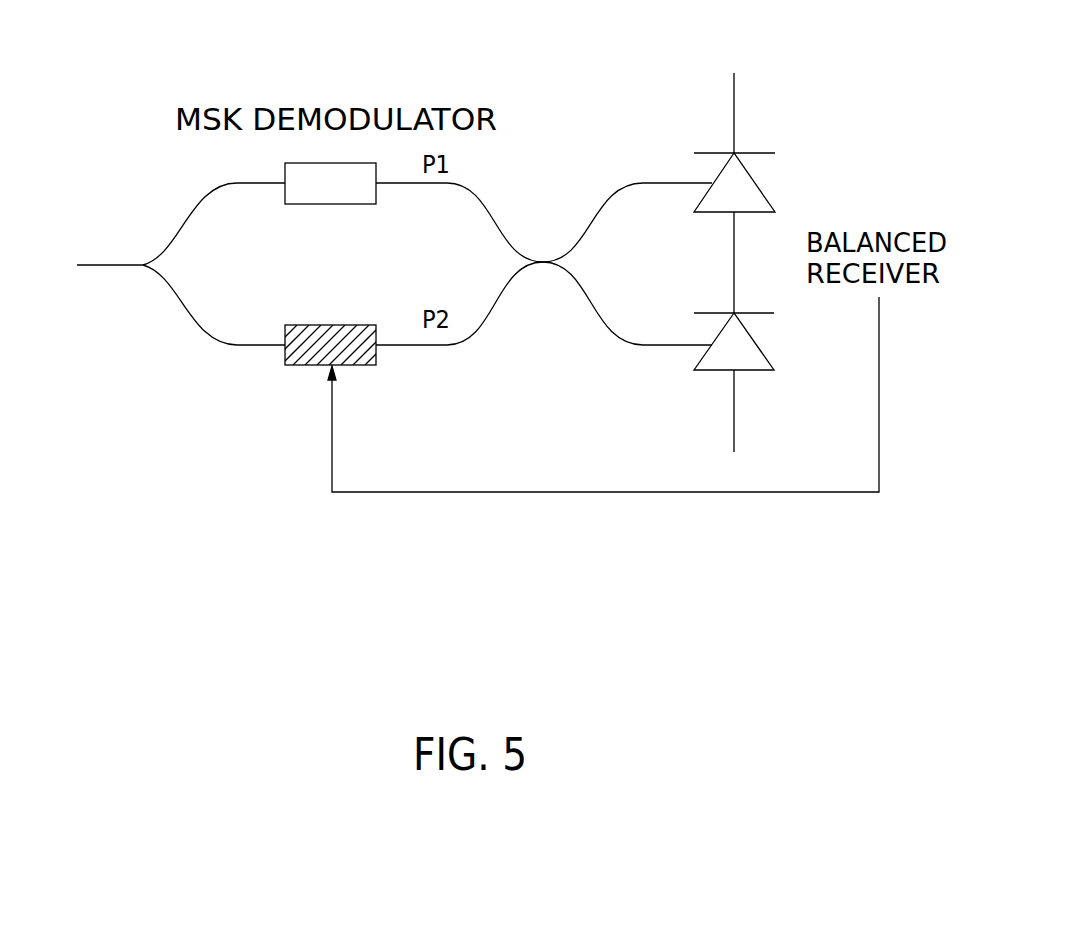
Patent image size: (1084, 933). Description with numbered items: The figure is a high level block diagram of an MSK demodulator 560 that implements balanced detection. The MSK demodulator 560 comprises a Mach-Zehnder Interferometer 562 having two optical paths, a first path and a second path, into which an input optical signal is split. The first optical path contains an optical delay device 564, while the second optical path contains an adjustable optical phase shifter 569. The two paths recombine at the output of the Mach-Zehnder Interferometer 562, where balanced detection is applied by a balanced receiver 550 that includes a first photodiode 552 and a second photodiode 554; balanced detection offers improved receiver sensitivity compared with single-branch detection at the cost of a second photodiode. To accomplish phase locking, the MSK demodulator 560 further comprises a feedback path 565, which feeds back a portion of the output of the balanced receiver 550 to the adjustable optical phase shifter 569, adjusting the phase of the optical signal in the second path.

The balanced receiver 550 is at (803, 246).
The first photodiode 552 is at (754, 182).
The second photodiode 554 is at (748, 333).
The MSK demodulator 560 is at (815, 639).
The Mach-Zehnder Interferometer 562 is at (173, 247).
The optical delay device 564 is at (335, 204).
The feedback path 565 is at (552, 493).
The adjustable optical phase shifter 569 is at (307, 366).